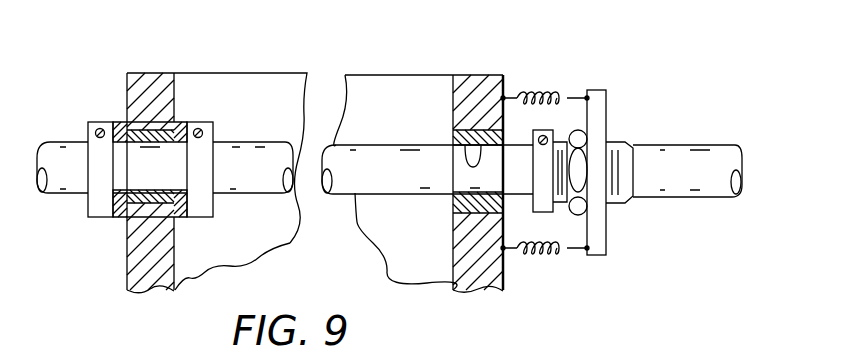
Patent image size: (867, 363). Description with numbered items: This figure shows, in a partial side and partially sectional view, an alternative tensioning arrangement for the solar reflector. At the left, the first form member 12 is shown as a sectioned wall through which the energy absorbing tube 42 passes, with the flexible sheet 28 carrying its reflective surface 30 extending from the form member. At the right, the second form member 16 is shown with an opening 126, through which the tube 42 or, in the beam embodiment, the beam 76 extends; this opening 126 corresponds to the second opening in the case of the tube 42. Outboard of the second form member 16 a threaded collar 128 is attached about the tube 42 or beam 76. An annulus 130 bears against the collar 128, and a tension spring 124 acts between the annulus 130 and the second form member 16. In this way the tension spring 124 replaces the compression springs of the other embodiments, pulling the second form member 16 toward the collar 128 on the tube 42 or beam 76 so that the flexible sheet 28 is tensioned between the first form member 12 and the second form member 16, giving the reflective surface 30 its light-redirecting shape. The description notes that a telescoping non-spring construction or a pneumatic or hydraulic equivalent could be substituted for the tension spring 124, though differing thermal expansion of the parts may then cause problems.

The first form member 12 is at (137, 98).
The flexible sheet 28 is at (245, 74).
The reflective surface 30 is at (252, 223).
The energy absorbing tube 42 is at (373, 147).
The beam 76 is at (532, 146).
The opening 126 is at (483, 130).
The tension spring 124 is at (540, 93).
The annulus 130 is at (597, 113).
The threaded collar 128 is at (548, 213).
The second form member 16 is at (475, 253).